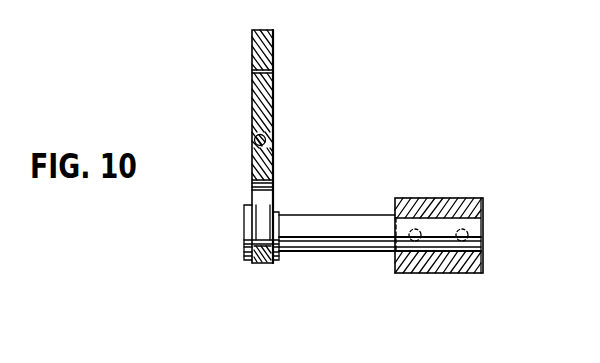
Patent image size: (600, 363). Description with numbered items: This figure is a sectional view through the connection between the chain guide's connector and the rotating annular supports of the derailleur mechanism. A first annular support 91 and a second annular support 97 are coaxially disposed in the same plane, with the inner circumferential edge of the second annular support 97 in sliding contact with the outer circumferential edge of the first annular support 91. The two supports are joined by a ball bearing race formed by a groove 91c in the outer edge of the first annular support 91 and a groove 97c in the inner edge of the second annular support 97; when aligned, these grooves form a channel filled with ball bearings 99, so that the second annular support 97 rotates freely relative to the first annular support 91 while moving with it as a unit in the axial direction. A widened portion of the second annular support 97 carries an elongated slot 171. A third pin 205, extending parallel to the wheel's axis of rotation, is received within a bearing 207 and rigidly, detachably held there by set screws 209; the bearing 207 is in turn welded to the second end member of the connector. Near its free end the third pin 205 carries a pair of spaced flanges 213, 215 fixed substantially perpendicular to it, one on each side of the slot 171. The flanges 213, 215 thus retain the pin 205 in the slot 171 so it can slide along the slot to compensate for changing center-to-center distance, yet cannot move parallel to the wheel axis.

The first annular support 91 is at (257, 90).
The groove 91c is at (258, 118).
The ball bearings 99 is at (254, 140).
The groove 97c is at (254, 166).
The second annular support 97 is at (256, 177).
The elongated slot 171 is at (262, 206).
The flange 215 is at (246, 221).
The flange 213 is at (281, 223).
The third pin 205 is at (348, 215).
The bearing 207 is at (430, 205).
The set screws 209 is at (470, 233).